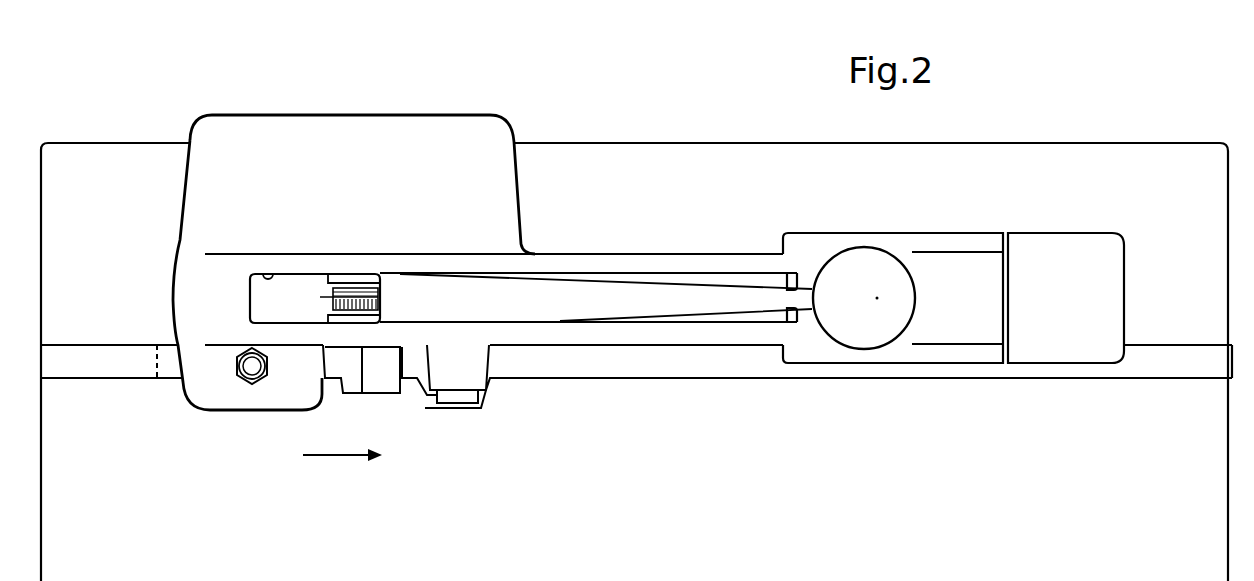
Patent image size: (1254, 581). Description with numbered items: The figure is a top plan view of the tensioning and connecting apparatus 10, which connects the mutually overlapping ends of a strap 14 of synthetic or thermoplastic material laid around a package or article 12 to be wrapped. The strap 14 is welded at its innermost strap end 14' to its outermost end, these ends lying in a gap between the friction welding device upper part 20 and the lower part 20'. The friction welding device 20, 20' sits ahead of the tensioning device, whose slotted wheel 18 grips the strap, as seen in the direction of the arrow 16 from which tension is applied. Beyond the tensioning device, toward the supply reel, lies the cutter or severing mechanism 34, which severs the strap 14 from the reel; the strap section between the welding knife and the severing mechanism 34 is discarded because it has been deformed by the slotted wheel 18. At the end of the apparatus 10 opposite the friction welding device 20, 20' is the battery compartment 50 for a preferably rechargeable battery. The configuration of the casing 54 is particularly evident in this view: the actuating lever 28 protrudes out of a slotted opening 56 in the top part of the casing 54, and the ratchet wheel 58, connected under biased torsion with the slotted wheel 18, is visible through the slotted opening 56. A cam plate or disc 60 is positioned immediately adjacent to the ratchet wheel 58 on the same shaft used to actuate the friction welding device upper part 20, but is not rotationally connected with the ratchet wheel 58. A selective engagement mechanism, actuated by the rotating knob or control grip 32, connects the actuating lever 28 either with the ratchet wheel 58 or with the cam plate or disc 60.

The tensioning and connecting apparatus 10 is at (300, 92).
The package or article 12 is at (140, 509).
The strap 14 is at (636, 382).
The innermost strap end 14' is at (164, 393).
The arrow 16 is at (330, 458).
The slotted wheel 18 is at (408, 398).
The friction welding device upper part 20 is at (243, 401).
The friction welding device lower part 20' is at (342, 395).
The actuating lever 28 is at (630, 289).
The rotating knob or control grip 32 is at (863, 252).
The cutter or severing mechanism 34 is at (448, 380).
The battery compartment 50 is at (1066, 246).
The casing 54 is at (518, 186).
The slotted opening 56 is at (268, 266).
The ratchet wheel 58 is at (326, 300).
The cam plate or disc 60 is at (332, 293).